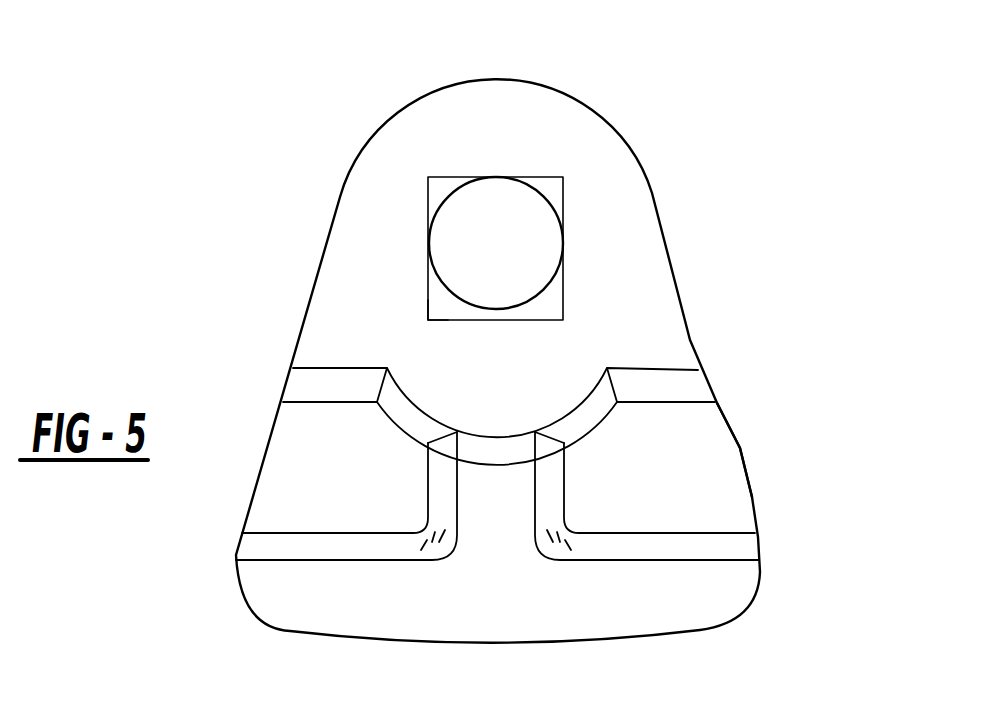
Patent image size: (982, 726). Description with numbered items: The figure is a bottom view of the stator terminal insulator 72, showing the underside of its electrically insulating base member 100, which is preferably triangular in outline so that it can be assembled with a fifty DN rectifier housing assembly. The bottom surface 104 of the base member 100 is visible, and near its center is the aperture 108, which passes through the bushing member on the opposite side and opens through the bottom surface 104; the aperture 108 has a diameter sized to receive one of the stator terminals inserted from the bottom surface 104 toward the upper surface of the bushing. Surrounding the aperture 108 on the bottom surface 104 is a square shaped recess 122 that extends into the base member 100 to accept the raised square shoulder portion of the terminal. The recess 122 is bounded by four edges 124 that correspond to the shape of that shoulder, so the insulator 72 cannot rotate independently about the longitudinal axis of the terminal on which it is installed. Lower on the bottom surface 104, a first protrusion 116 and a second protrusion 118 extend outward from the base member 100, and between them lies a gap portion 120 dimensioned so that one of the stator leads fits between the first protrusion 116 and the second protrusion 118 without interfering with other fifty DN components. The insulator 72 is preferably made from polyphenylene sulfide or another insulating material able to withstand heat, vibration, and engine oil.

The stator terminal insulator 72 is at (655, 163).
The base member 100 is at (738, 448).
The bottom surface 104 is at (657, 323).
The aperture 108 is at (502, 216).
The first protrusion 116 is at (325, 497).
The second protrusion 118 is at (702, 508).
The gap portion 120 is at (496, 506).
The square shaped recess 122 is at (551, 308).
The edges 124 is at (431, 302).